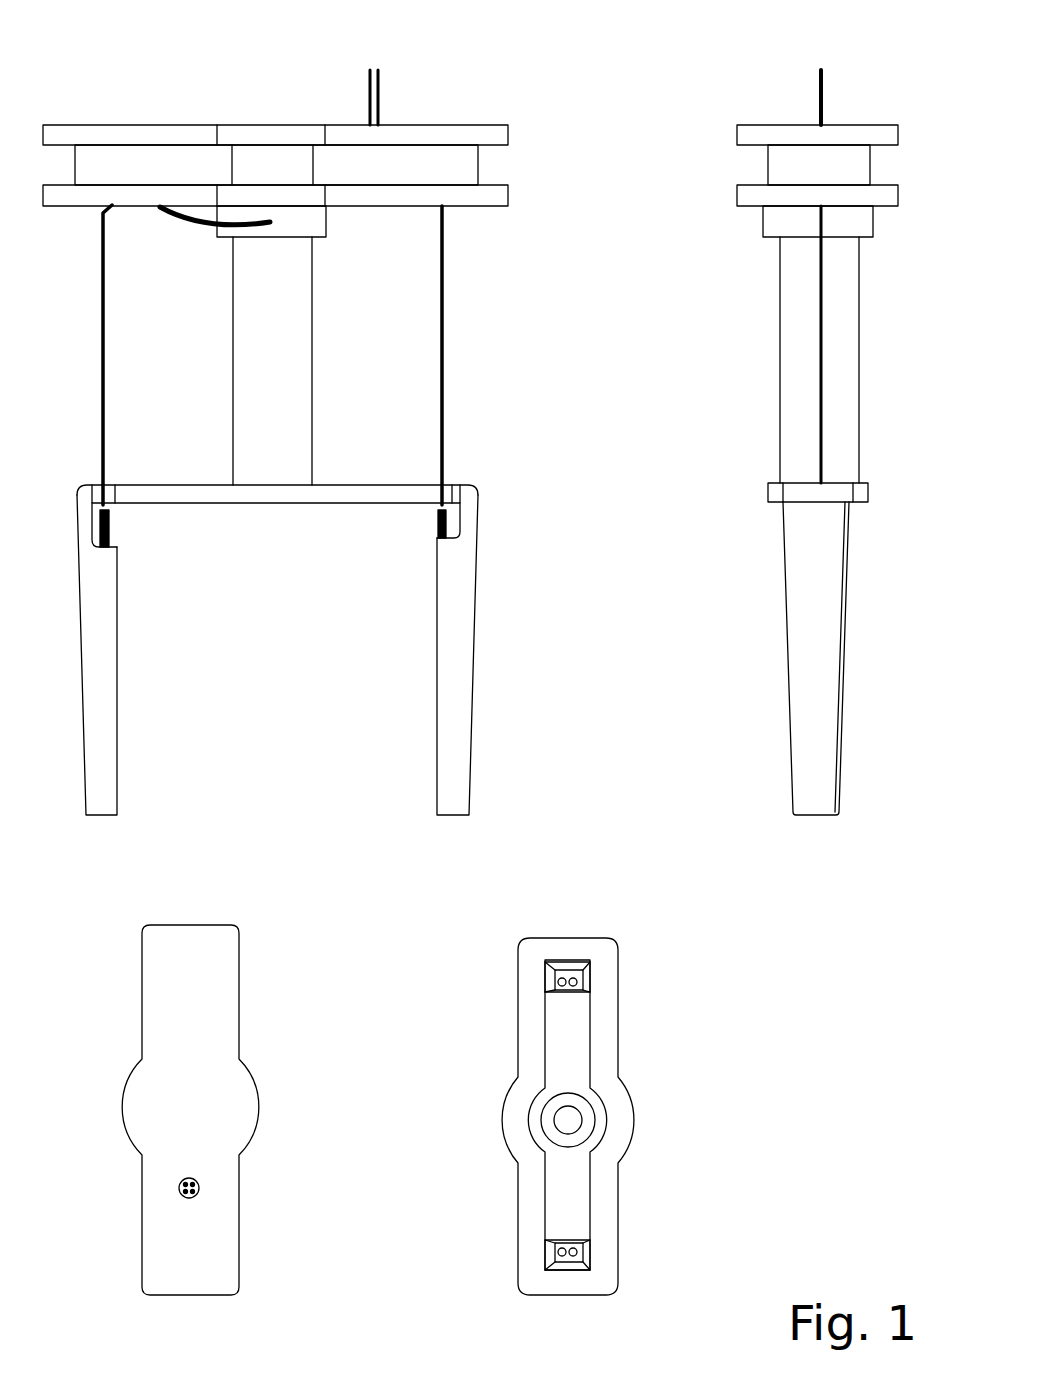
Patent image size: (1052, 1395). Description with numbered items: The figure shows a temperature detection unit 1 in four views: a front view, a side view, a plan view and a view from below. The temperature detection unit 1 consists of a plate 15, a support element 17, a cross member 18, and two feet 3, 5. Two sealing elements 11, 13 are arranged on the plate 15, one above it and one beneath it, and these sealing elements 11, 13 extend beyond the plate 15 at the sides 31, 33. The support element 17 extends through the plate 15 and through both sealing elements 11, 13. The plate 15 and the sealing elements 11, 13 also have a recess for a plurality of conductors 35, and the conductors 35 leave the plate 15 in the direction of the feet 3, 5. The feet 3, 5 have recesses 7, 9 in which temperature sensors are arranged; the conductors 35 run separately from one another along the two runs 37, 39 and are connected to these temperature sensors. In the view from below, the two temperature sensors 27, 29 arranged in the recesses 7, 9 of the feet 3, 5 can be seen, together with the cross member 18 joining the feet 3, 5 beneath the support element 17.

The temperature detection unit 1 is at (330, 53).
The foot 3 is at (100, 737).
The foot 5 is at (455, 737).
The recess 7 is at (118, 535).
The recess 9 is at (432, 535).
The sealing element 11 is at (500, 136).
The sealing element 13 is at (383, 195).
The plate 15 is at (384, 178).
The support element 17 is at (262, 115).
The cross member 18 is at (445, 478).
The temperature sensor 27 is at (572, 1262).
The temperature sensor 29 is at (572, 968).
The side 31 is at (507, 114).
The side 33 is at (505, 218).
The conductors 35 is at (398, 73).
The conductor run 37 is at (110, 295).
The conductor run 39 is at (442, 325).